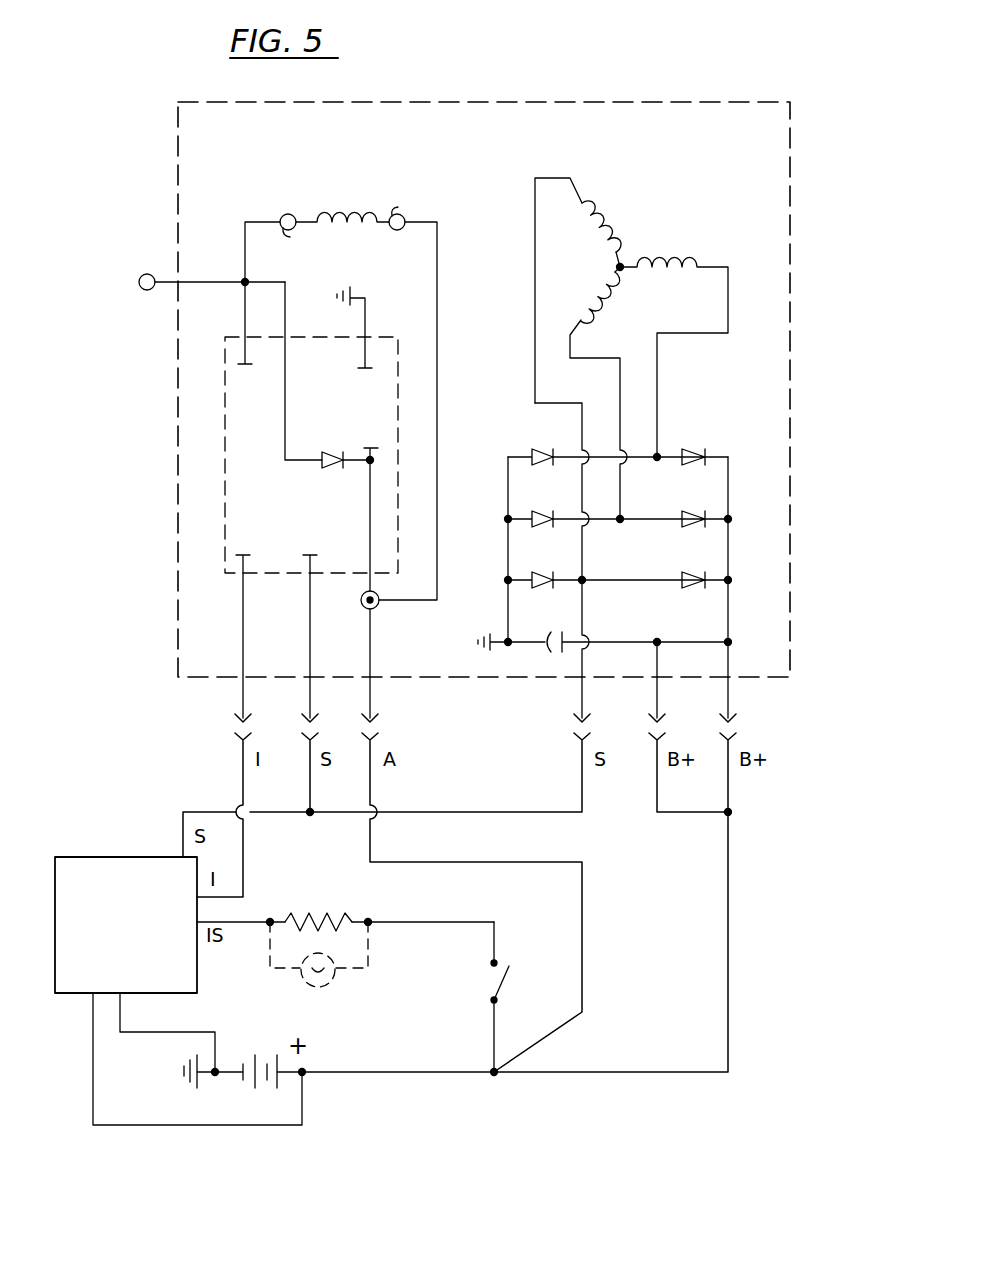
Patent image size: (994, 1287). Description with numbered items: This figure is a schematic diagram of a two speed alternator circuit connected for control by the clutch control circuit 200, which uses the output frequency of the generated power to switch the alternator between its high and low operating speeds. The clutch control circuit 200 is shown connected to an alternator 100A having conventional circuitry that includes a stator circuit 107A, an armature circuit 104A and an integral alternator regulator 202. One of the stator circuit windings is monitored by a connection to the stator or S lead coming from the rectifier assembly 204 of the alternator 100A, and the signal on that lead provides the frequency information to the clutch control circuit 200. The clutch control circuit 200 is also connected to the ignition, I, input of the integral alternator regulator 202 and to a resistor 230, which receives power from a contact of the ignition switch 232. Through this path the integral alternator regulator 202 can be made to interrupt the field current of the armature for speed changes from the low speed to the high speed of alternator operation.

The alternator 100A is at (695, 100).
The armature circuit 104A is at (350, 206).
The stator circuit 107A is at (645, 235).
The integral alternator regulator 202 is at (402, 382).
The rectifier assembly 204 is at (690, 432).
The clutch control circuit 200 is at (122, 857).
The resistor 230 is at (341, 918).
The ignition switch 232 is at (488, 988).